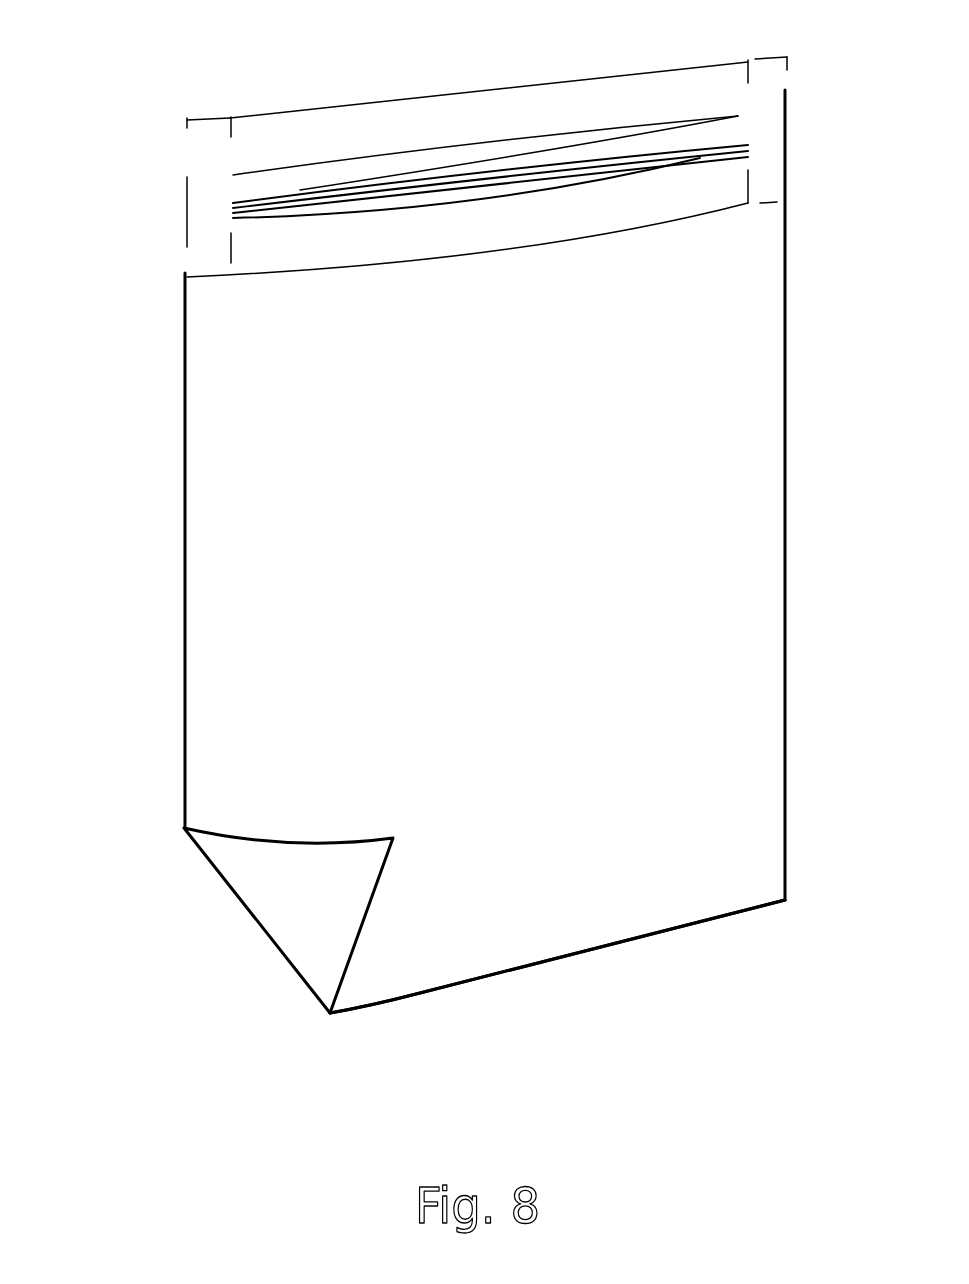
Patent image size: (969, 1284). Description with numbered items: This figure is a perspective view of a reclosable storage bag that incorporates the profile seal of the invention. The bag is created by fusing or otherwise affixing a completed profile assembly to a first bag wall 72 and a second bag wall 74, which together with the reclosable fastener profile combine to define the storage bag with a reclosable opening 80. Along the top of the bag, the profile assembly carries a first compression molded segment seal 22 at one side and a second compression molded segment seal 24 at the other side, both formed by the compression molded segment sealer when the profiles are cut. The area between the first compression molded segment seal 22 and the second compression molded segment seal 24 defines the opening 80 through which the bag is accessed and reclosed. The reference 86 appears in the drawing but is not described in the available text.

The pouch 86 is at (77, 600).
The opening 80 is at (487, 111).
The first compression molded segment seal 22 is at (213, 218).
The second compression molded segment seal 24 is at (768, 115).
The first bag wall 72 is at (535, 918).
The second bag wall 74 is at (262, 887).